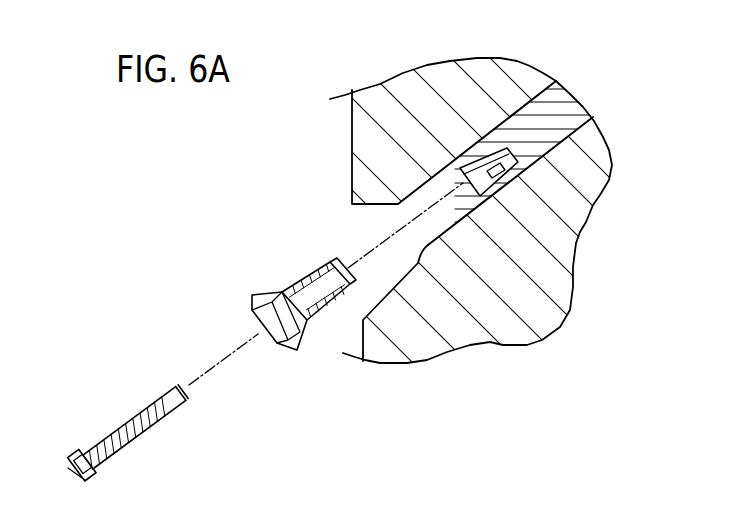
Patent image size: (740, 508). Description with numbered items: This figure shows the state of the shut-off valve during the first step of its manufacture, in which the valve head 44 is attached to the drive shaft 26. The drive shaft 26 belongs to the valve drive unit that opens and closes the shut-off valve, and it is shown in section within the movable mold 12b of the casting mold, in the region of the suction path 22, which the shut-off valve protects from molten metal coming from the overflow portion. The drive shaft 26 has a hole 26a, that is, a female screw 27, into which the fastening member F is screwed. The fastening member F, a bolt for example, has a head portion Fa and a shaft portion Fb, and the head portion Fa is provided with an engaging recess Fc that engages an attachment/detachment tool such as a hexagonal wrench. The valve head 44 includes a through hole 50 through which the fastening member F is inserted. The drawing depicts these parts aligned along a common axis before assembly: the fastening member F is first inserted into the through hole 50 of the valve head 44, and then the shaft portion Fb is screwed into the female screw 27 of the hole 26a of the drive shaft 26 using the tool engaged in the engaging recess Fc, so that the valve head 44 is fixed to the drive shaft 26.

The movable mold 12b is at (407, 88).
The suction path 22 is at (519, 103).
The drive shaft 26 is at (572, 110).
The hole 26a is at (577, 235).
The female screw 27 is at (583, 213).
The valve head 44 is at (293, 349).
The through hole 50 is at (266, 318).
The fastening member F is at (110, 418).
The head portion Fa is at (70, 456).
The shaft portion Fb is at (142, 436).
The engaging recess Fc is at (74, 464).